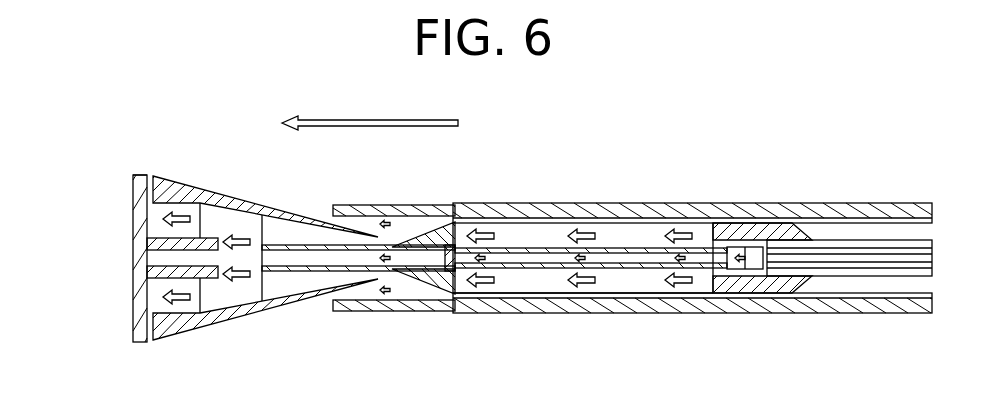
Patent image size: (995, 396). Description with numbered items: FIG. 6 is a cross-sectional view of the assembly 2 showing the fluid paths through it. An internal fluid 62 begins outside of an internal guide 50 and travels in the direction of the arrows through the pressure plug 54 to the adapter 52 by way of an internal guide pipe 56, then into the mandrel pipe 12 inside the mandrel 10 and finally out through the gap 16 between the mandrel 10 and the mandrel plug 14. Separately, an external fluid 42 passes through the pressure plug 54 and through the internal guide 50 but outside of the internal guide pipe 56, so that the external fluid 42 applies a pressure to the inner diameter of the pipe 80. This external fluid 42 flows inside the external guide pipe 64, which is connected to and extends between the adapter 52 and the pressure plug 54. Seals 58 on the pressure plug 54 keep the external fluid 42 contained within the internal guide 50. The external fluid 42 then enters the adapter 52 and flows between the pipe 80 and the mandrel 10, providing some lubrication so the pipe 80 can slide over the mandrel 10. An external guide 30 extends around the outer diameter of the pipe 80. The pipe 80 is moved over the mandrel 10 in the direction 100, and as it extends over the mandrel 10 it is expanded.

The assembly 2 is at (115, 128).
The mandrel 10 is at (196, 338).
The mandrel pipe 12 is at (244, 298).
The mandrel plug 14 is at (105, 220).
The gap 16 is at (140, 175).
The external guide 30 is at (745, 315).
The external fluid 42 is at (598, 288).
The internal guide 50 is at (530, 305).
The adapter 52 is at (400, 207).
The pressure plug 54 is at (768, 203).
The internal guide pipe 56 is at (641, 250).
The seals 58 is at (808, 203).
The internal fluid 62 is at (547, 248).
The external guide pipe 64 is at (690, 296).
The pipe 80 is at (443, 197).
The direction 100 is at (385, 120).